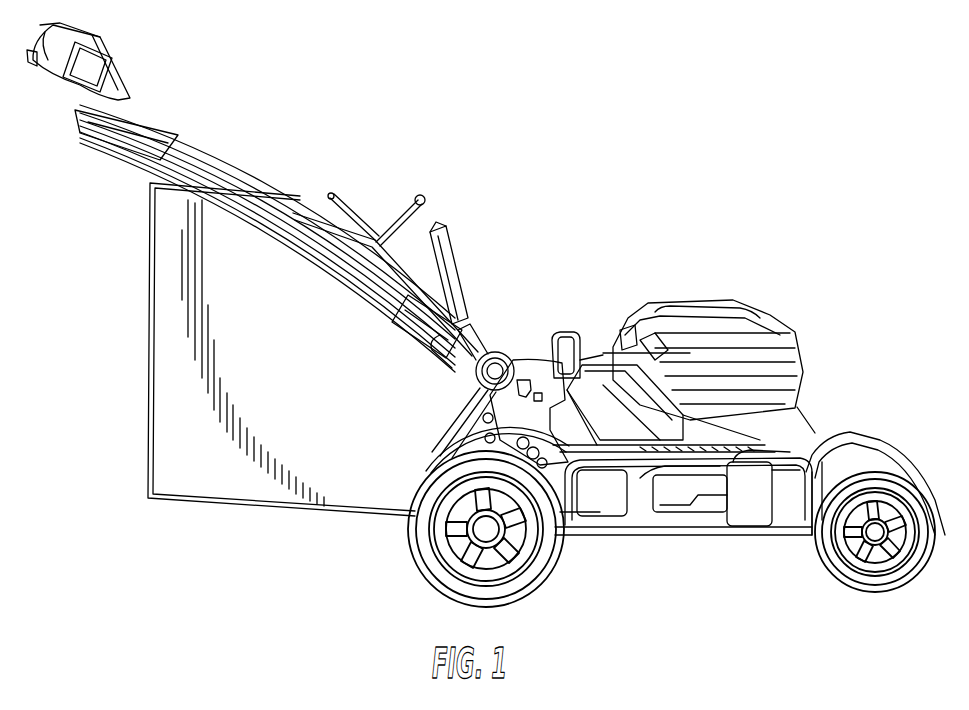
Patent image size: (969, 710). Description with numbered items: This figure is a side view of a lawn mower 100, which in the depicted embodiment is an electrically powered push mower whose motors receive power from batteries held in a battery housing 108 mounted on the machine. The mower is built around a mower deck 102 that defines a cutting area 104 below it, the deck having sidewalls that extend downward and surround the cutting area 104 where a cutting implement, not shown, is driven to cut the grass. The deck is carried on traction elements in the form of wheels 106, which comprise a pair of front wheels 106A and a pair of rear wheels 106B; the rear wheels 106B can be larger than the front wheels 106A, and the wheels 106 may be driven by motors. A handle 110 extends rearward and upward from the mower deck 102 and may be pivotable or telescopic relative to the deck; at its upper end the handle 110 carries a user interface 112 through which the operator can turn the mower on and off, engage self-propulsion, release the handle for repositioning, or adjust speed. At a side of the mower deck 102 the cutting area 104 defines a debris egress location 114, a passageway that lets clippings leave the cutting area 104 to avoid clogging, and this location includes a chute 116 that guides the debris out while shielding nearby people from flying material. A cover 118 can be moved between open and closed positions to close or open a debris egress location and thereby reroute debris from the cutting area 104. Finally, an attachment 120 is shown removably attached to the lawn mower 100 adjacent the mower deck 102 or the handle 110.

The lawn mower 100 is at (652, 172).
The mower deck 102 is at (849, 437).
The cutting area 104 is at (776, 560).
The wheels 106 is at (562, 612).
The front wheels 106A is at (877, 590).
The rear wheels 106B is at (410, 537).
The battery housing 108 is at (747, 305).
The handle 110 is at (241, 188).
The user interface 112 is at (86, 55).
The debris egress location 114 is at (672, 498).
The chute 116 is at (745, 518).
The cover 118 is at (463, 291).
The attachment 120 is at (233, 465).